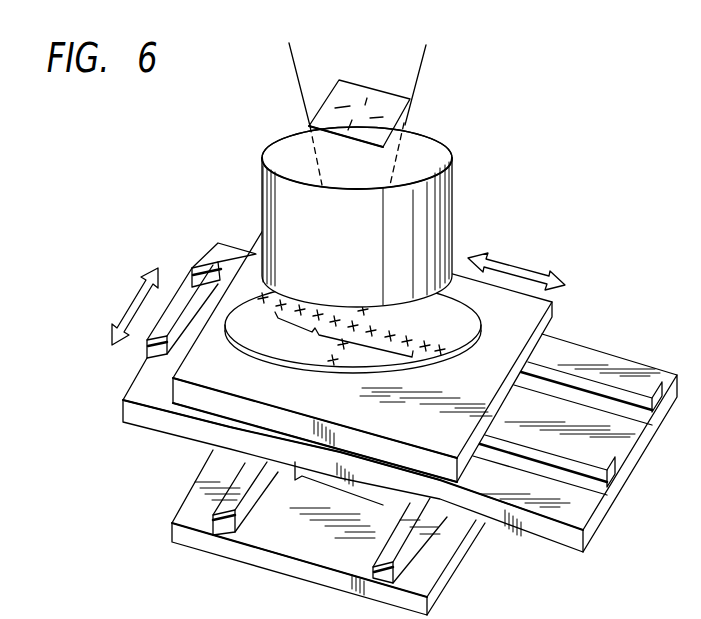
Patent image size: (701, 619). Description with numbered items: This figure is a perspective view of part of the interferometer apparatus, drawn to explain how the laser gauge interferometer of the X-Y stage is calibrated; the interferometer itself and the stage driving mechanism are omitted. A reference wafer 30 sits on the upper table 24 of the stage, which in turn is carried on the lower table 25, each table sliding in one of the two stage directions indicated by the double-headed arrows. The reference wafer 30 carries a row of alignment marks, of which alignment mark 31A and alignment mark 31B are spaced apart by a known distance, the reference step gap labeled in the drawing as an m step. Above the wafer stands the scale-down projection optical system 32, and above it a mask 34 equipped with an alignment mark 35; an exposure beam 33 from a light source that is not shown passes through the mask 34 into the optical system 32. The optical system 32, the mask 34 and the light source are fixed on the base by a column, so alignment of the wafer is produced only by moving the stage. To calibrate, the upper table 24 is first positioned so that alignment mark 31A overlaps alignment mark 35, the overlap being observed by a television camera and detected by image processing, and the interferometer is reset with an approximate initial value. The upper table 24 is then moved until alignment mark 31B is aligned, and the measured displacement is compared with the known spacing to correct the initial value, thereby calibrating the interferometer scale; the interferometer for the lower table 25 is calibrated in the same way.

The upper table 24 is at (536, 313).
The lower table 25 is at (181, 428).
The reference wafer 30 is at (258, 292).
The alignment mark 31A is at (262, 296).
The alignment mark 31B is at (437, 338).
The scale-down projection optical system 32 is at (278, 149).
The exposure beam 33 is at (423, 62).
The mask 34 is at (338, 96).
The alignment mark 35 is at (365, 103).